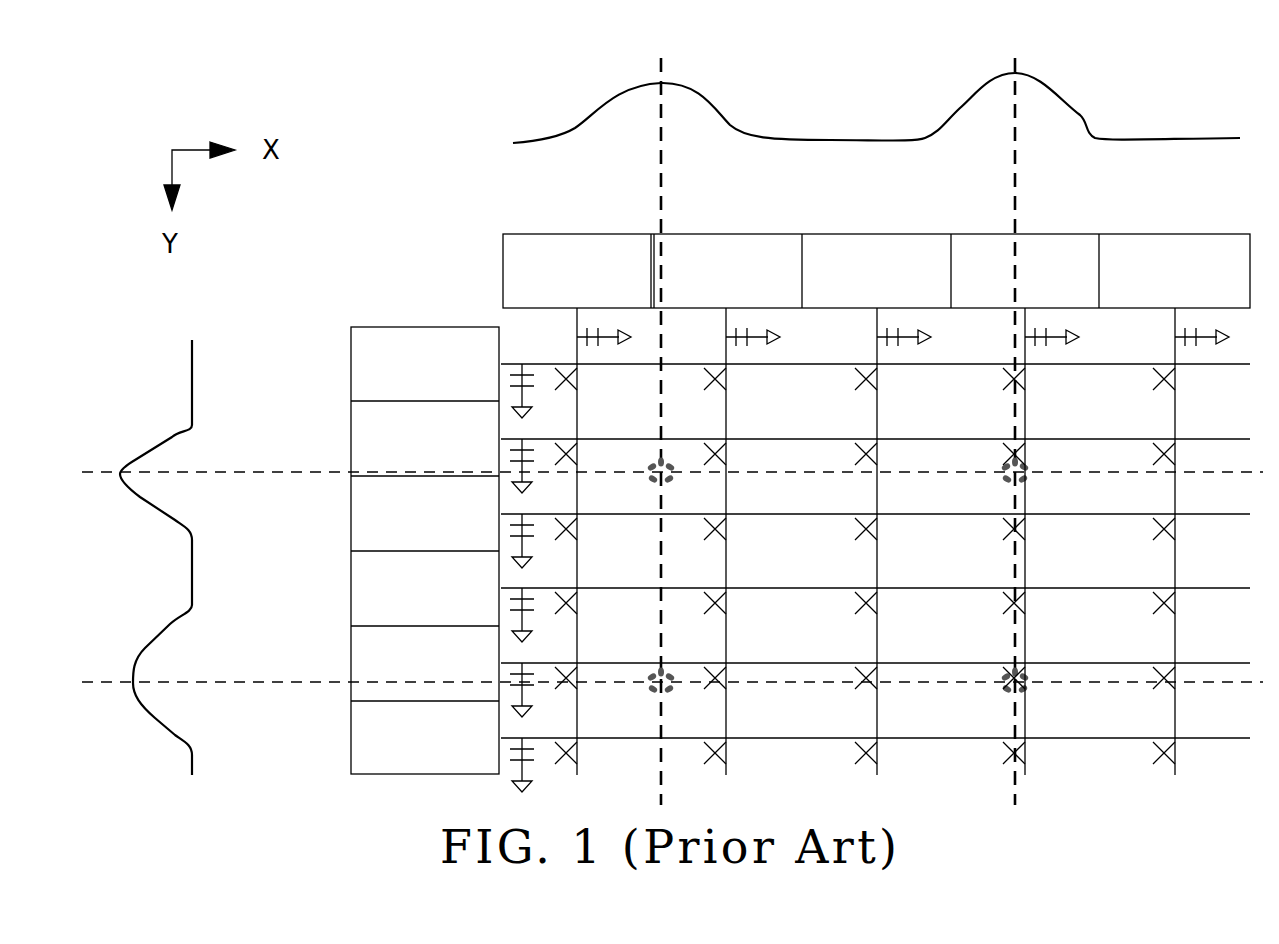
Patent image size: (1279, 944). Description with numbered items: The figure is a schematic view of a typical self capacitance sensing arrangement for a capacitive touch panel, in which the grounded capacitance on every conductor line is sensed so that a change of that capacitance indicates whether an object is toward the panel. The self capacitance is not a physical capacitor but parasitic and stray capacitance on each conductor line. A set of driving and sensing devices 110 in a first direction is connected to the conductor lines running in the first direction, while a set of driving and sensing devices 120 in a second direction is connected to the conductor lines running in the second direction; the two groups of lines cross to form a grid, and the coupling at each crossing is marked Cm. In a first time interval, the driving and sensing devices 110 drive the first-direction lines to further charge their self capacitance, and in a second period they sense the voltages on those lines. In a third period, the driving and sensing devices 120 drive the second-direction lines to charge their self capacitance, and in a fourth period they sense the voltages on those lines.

The driving and sensing devices in a first direction 110 is at (422, 327).
The driving and sensing devices in a second direction 120 is at (523, 229).
The mutual capacitance between electrodes Cm is at (890, 569).